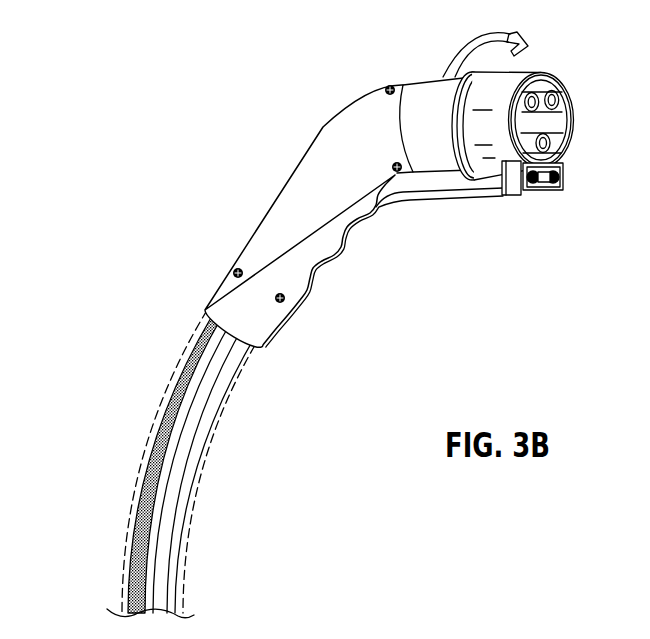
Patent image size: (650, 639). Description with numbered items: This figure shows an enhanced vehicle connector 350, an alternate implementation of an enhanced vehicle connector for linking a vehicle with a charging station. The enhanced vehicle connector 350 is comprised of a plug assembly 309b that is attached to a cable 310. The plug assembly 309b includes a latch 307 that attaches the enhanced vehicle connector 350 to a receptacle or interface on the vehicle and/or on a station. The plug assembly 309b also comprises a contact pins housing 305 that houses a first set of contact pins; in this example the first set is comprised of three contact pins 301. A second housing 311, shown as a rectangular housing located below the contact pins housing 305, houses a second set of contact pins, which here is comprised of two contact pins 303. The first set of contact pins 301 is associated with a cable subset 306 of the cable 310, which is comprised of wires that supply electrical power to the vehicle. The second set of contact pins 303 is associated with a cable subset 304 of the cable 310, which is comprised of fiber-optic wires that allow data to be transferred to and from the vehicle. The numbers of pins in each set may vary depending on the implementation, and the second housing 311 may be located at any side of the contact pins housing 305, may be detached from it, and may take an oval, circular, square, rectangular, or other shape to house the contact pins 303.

The enhanced vehicle connector 350 is at (106, 176).
The contact pins 301 is at (557, 100).
The contact pins 303 is at (562, 178).
The contact pins housing 305 is at (524, 72).
The latch 307 is at (466, 47).
The plug assembly 309b is at (323, 127).
The second housing 311 is at (543, 197).
The cable subset 304 is at (165, 422).
The cable subset 306 is at (187, 457).
The cable 310 is at (133, 498).